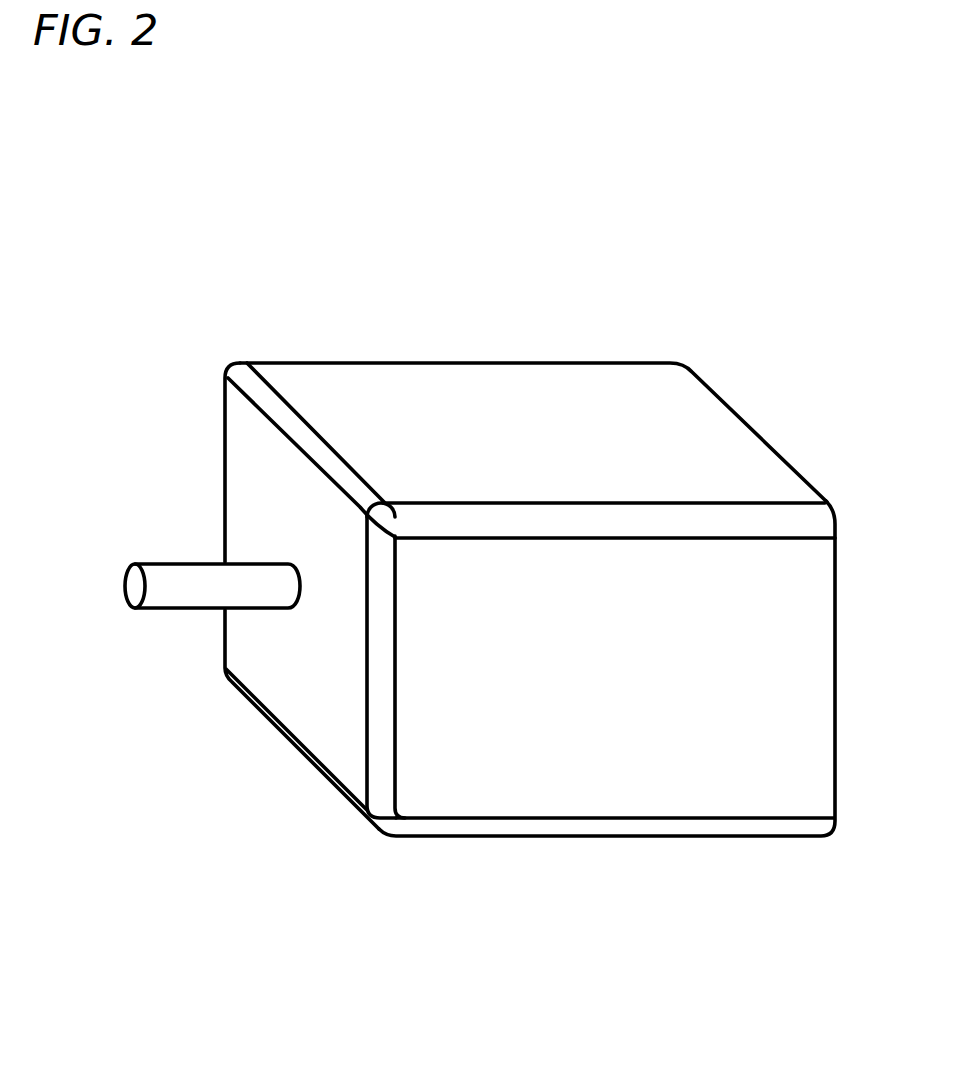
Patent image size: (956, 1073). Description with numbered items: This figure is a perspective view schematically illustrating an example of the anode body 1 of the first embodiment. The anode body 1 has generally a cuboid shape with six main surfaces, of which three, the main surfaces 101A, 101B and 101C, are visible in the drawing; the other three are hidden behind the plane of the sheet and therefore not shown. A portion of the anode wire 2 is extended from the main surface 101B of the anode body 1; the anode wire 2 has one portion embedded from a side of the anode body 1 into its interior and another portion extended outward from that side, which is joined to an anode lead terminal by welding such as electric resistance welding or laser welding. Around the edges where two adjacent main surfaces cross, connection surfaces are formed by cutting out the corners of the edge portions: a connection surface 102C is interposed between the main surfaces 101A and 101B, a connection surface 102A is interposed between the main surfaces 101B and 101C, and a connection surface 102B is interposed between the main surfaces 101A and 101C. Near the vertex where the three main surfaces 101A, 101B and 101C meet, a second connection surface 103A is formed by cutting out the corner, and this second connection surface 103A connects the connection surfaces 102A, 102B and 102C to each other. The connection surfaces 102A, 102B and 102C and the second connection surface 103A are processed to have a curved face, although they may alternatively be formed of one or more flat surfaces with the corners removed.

The anode body 1 is at (474, 579).
The anode wire 2 is at (168, 590).
The main surface 101A is at (467, 418).
The main surface 101B is at (263, 502).
The main surface 101C is at (637, 730).
The connection surface 102A is at (380, 692).
The connection surface 102B is at (582, 517).
The connection surface 102C is at (280, 414).
The second connection surface 103A is at (382, 515).